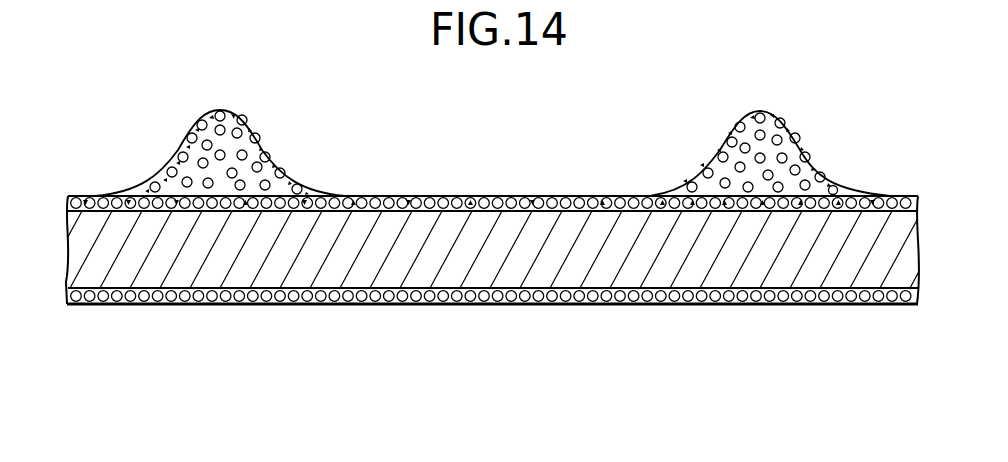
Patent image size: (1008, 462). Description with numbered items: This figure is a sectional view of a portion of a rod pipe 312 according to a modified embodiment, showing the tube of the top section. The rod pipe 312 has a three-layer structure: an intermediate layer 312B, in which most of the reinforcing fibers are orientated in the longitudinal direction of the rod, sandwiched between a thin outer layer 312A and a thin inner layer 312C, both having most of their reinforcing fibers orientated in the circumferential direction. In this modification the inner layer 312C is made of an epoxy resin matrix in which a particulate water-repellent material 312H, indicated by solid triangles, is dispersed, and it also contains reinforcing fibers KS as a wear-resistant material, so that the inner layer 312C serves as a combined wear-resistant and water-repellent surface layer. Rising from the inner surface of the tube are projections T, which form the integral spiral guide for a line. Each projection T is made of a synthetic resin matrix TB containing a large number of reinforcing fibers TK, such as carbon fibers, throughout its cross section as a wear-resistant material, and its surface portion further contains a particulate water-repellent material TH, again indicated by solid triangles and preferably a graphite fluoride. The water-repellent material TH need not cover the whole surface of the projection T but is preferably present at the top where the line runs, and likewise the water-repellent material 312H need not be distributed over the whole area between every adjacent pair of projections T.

The projection T is at (198, 114).
The synthetic resin matrix TB is at (229, 122).
The reinforcing fibers TK is at (163, 165).
The particulate water-repellent material TH is at (258, 145).
The rod pipe 312 is at (496, 274).
The outer layer 312A is at (870, 300).
The intermediate layer 312B is at (777, 243).
The inner layer 312C is at (682, 213).
The particulate water-repellent material 312H is at (498, 207).
The reinforcing fibers KS is at (512, 297).